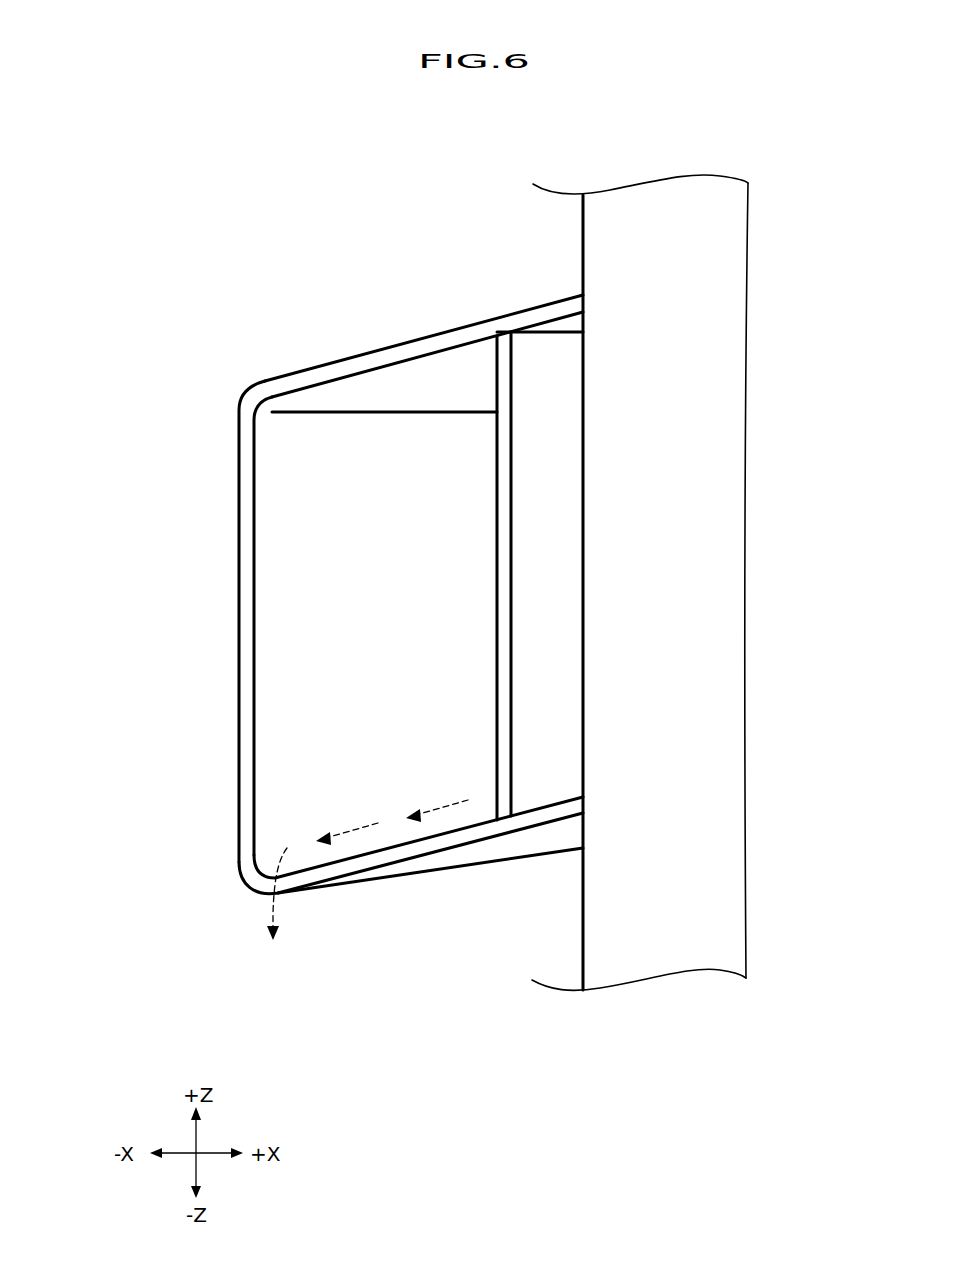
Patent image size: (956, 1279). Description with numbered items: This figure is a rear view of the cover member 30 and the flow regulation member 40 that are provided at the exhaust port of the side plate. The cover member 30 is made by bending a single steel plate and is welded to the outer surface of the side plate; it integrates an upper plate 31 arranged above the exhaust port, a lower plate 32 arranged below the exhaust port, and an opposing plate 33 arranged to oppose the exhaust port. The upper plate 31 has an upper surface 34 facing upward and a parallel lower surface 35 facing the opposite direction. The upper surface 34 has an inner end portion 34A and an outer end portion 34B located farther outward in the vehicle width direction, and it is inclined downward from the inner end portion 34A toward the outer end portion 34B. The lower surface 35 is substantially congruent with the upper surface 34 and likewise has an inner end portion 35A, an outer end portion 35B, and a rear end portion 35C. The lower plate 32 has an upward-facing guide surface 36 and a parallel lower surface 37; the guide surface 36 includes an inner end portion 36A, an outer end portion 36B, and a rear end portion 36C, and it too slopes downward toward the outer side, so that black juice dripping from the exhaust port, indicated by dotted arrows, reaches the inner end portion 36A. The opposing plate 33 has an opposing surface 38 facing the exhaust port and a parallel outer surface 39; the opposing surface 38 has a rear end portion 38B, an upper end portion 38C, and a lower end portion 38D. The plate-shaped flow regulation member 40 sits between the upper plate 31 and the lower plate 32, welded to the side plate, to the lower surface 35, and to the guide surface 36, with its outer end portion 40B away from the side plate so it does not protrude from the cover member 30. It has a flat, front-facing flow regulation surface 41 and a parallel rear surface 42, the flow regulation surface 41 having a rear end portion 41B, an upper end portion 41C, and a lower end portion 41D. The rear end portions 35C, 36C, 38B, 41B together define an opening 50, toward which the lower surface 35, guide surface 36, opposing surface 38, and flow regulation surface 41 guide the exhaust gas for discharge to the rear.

The cover member 30 is at (374, 604).
The upper plate 31 is at (335, 362).
The lower plate 32 is at (388, 858).
The opposing plate 33 is at (239, 647).
The upper surface 34 is at (440, 334).
The inner end portion 34A is at (580, 295).
The outer end portion 34B is at (256, 378).
The lower surface 35 is at (400, 365).
The inner end portion 35A is at (583, 318).
The outer end portion 35B is at (282, 398).
The rear end portion 35C is at (433, 355).
The guide surface 36 is at (453, 830).
The inner end portion 36A is at (583, 792).
The outer end portion 36B is at (272, 884).
The rear end portion 36C is at (305, 880).
The lower surface 37 is at (485, 857).
The opposing surface 38 is at (256, 559).
The rear end portion 38B is at (257, 611).
The upper end portion 38C is at (262, 408).
The lower end portion 38D is at (258, 862).
The outer surface 39 is at (239, 720).
The flow regulation member 40 is at (548, 617).
The outer end portion 40B is at (497, 493).
The flow regulation surface 41 is at (497, 577).
The rear end portion 41B is at (497, 676).
The upper end portion 41C is at (490, 336).
The lower end portion 41D is at (500, 820).
The rear surface 42 is at (550, 535).
The opening 50 is at (349, 802).